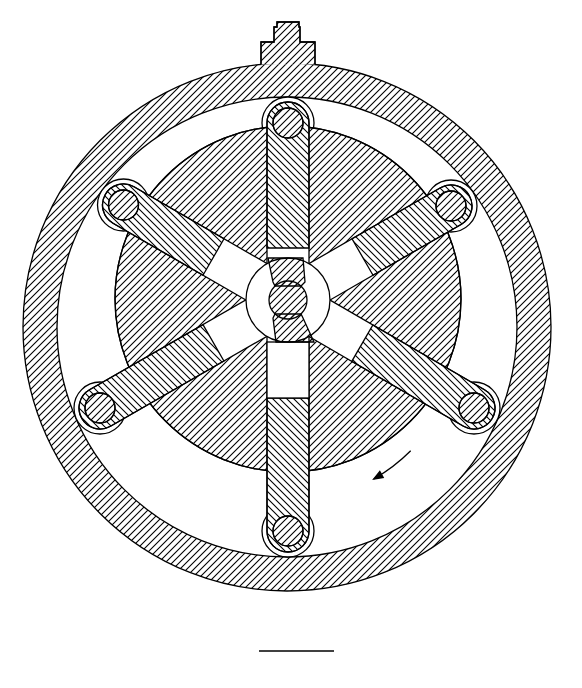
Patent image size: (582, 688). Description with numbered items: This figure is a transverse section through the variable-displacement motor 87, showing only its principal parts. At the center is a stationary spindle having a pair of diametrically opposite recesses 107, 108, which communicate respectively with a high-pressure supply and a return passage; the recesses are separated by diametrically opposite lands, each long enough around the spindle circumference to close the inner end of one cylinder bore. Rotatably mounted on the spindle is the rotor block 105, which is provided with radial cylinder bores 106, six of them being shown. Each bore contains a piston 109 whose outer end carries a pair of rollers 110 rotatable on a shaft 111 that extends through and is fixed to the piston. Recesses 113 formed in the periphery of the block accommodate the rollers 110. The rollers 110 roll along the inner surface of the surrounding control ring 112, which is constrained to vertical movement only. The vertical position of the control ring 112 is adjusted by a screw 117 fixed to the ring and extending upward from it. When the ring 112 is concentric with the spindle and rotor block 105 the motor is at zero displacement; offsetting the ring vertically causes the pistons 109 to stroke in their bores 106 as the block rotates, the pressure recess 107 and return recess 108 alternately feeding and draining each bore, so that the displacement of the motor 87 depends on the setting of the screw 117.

The variable-displacement motor 87 is at (413, 79).
The rotor block 105 is at (457, 325).
The radial cylinder bores 106 is at (305, 379).
The recess 107 is at (319, 316).
The recess 108 is at (254, 317).
The piston 109 is at (267, 497).
The rollers 110 is at (125, 179).
The shaft 111 is at (108, 221).
The control ring 112 is at (338, 70).
The recesses 113 is at (150, 411).
The screw 117 is at (300, 33).